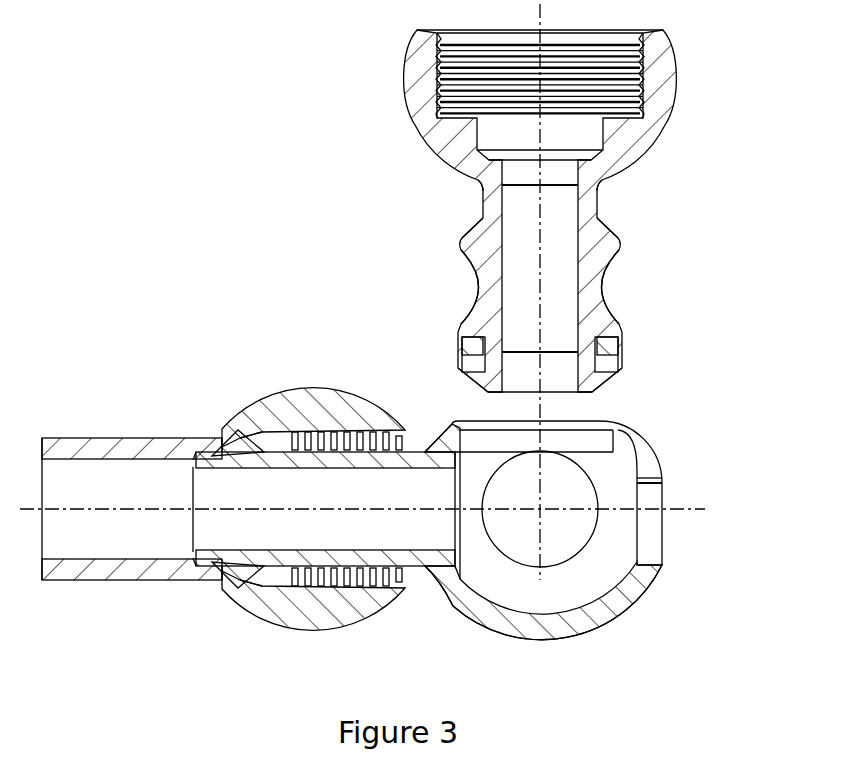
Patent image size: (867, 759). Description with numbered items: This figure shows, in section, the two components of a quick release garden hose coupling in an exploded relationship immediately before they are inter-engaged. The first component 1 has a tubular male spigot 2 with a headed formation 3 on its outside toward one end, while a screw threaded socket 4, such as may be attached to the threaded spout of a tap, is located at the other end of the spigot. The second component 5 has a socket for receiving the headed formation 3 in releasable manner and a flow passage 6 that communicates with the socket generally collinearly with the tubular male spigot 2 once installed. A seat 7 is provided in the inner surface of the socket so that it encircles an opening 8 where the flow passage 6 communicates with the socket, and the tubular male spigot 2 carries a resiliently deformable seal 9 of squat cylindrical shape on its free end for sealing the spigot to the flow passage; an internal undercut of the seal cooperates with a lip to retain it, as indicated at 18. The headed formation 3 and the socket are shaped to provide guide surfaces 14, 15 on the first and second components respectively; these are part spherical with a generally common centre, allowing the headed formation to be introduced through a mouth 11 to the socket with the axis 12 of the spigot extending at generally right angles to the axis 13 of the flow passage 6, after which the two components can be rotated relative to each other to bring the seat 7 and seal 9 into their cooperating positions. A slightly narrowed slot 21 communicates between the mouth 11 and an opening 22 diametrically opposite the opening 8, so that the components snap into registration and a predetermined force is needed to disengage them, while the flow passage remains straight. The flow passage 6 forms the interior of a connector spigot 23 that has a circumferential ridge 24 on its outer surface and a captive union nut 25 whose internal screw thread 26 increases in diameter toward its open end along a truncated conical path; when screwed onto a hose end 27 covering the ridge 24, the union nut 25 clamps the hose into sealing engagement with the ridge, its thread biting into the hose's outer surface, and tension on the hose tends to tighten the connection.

The first component 1 is at (593, 221).
The tubular male spigot 2 is at (578, 193).
The headed formation 3 is at (595, 235).
The screw threaded socket 4 is at (645, 87).
The second component 5 is at (603, 555).
The flow passage 6 is at (318, 542).
The seat 7 is at (465, 523).
The opening 8 is at (450, 523).
The resilient seal 9 is at (617, 375).
The mouth 11 is at (553, 435).
The axis of the tubular male spigot 12 is at (540, 5).
The axis of the flow passage 13 is at (128, 567).
The guide surface 14 is at (610, 228).
The guide surface 15 is at (608, 572).
The internal undercut and lip 18 is at (617, 356).
The slot 21 is at (650, 462).
The opening 22 is at (598, 183).
The connector spigot 23 is at (363, 557).
The circumferential ridge 24 is at (237, 598).
The union nut 25 is at (283, 603).
The internal screw thread 26 is at (318, 583).
The hose end 27 is at (238, 578).